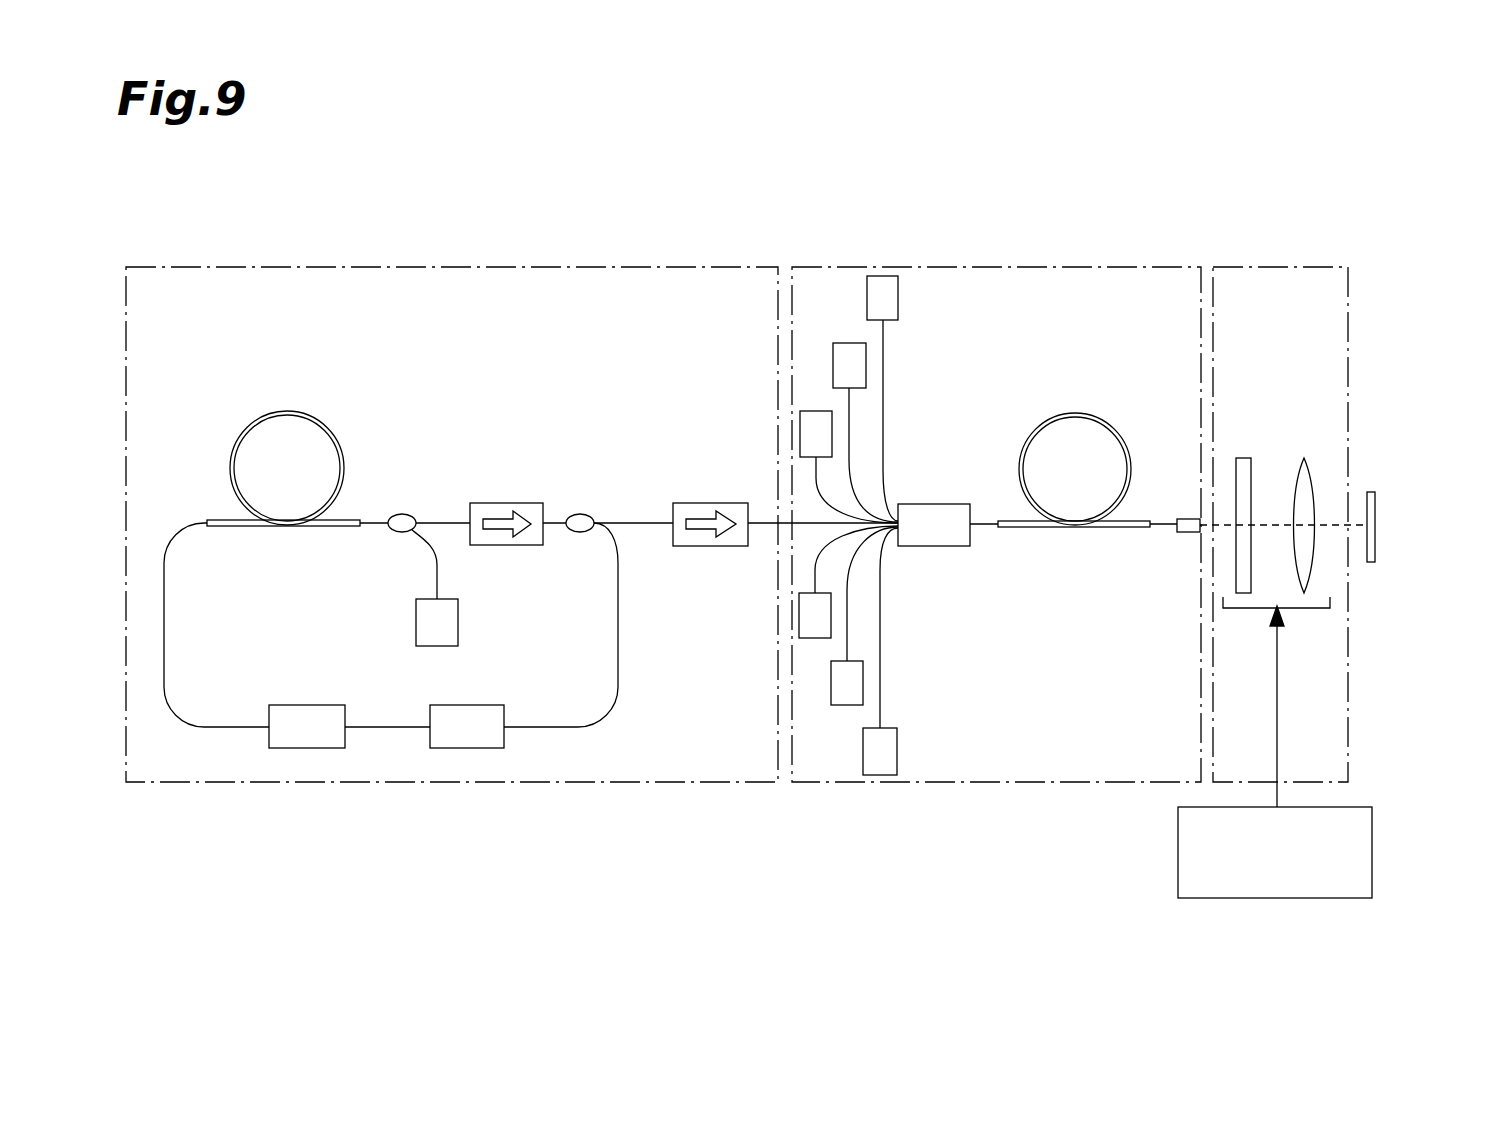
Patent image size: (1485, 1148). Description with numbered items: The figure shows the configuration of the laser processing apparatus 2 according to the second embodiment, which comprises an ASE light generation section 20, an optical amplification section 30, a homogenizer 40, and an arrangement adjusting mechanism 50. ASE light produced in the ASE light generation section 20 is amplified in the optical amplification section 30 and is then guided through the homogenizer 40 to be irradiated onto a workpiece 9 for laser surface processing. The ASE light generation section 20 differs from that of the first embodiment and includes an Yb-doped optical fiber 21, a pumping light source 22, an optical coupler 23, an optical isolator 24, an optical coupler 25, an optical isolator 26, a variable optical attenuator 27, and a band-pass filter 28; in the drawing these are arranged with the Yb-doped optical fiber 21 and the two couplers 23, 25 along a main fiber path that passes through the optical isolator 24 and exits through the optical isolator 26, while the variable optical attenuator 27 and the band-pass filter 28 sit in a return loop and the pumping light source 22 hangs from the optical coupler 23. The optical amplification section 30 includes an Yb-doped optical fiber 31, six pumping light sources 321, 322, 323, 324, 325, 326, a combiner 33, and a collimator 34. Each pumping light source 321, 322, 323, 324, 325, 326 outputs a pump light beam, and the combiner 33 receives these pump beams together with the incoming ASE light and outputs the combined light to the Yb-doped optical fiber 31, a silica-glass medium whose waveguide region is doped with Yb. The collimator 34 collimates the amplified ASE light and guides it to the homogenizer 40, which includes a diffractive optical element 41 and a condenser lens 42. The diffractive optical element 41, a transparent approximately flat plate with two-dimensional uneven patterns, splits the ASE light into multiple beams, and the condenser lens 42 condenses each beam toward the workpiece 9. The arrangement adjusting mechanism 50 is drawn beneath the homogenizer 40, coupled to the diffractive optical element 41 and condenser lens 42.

The laser processing apparatus 2 is at (1160, 196).
The workpiece 9 is at (1372, 492).
The ASE light generation section 20 is at (561, 267).
The Yb-doped optical fiber 21 is at (284, 412).
The pumping light source 22 is at (458, 623).
The optical coupler 23 is at (406, 514).
The optical isolator 24 is at (511, 503).
The optical coupler 25 is at (586, 514).
The optical isolator 26 is at (708, 503).
The variable optical attenuator 27 is at (473, 705).
The band-pass filter 28 is at (309, 705).
The optical amplification section 30 is at (1155, 267).
The Yb-doped optical fiber 31 is at (1075, 414).
The pumping light source 321 is at (884, 276).
The pumping light source 322 is at (850, 343).
The pumping light source 323 is at (820, 411).
The pumping light source 324 is at (815, 638).
The pumping light source 325 is at (847, 705).
The pumping light source 326 is at (880, 775).
The combiner 33 is at (933, 546).
The collimator 34 is at (1188, 532).
The homogenizer 40 is at (1319, 267).
The diffractive optical element 41 is at (1245, 458).
The condenser lens 42 is at (1312, 491).
The arrangement adjusting mechanism 50 is at (1372, 850).